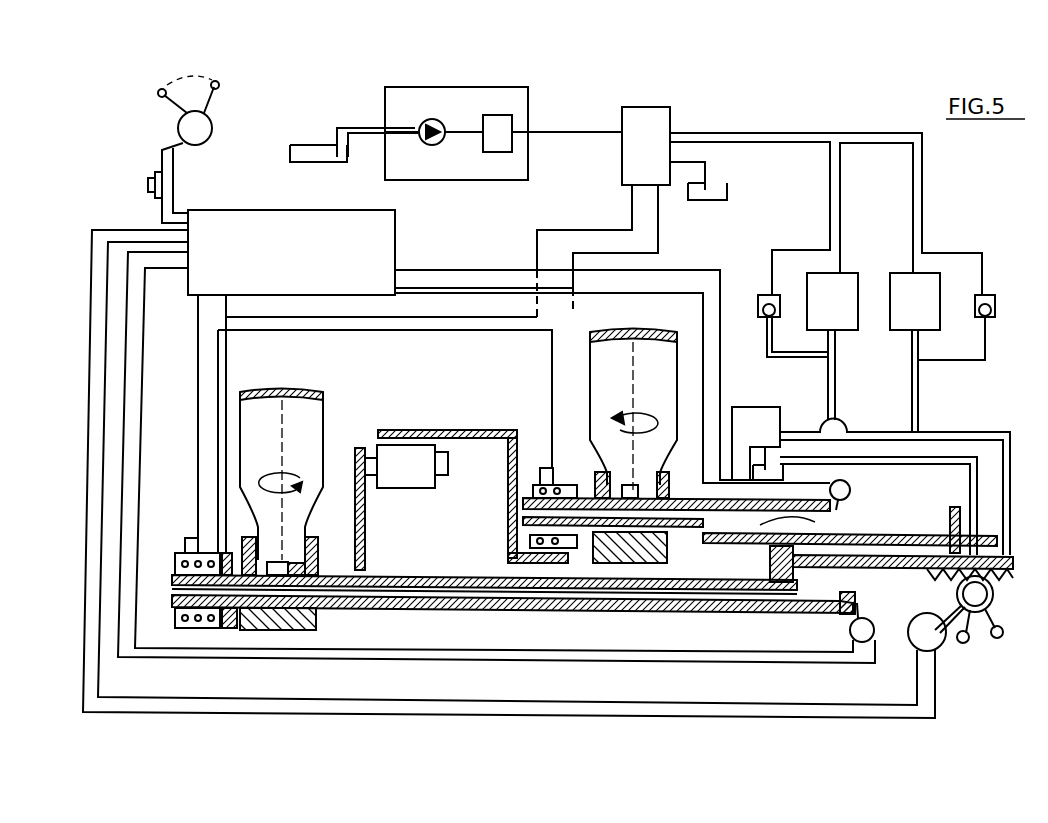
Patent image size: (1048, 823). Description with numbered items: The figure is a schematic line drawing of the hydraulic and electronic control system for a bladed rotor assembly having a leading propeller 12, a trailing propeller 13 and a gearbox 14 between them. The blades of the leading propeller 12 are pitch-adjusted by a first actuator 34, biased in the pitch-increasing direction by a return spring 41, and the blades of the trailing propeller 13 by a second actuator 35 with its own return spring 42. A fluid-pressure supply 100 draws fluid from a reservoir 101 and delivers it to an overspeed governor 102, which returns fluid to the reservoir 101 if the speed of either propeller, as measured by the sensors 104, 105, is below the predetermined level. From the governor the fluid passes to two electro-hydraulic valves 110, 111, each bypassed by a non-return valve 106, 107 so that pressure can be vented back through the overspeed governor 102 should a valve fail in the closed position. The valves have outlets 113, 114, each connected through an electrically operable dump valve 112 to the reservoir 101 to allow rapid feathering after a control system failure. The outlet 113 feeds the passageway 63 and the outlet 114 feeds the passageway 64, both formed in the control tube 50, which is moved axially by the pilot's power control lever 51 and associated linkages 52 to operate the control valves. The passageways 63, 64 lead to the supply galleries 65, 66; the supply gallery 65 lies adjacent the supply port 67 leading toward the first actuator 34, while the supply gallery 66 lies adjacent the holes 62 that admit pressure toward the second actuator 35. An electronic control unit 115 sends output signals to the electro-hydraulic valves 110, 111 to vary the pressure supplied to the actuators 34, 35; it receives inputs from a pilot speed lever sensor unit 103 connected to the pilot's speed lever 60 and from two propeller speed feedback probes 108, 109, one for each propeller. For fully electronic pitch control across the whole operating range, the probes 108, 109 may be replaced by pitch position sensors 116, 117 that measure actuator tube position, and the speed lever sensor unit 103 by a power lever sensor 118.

The leading propeller 12 is at (325, 415).
The trailing propeller 13 is at (632, 332).
The gearbox 14 is at (400, 490).
The first actuator 34 is at (185, 622).
The second actuator 35 is at (545, 549).
The return spring 41 is at (175, 566).
The return spring 42 is at (538, 517).
The control tube 50 is at (752, 552).
The power control lever 51 is at (968, 645).
The linkages 52 is at (1000, 610).
The pilot's speed lever 60 is at (158, 93).
The holes 62 is at (828, 532).
The passageway 63 is at (878, 570).
The passageway 64 is at (905, 556).
The supply gallery 65 is at (815, 598).
The supply gallery 66 is at (770, 562).
The supply port 67 is at (800, 610).
The fluid-pressure supply 100 is at (428, 181).
The reservoir 101 is at (330, 142).
The overspeed governor 102 is at (620, 183).
The pilot speed lever sensor unit 103 is at (148, 186).
The sensor 104 is at (185, 545).
The sensor 105 is at (533, 490).
The non-return valve 106 is at (990, 296).
The non-return valve 107 is at (760, 298).
The propeller speed feedback probe 108 is at (198, 505).
The propeller speed feedback probe 109 is at (547, 466).
The first electro-hydraulic valve 110 is at (935, 272).
The electro-hydraulic valve 111 is at (845, 270).
The dump valve 112 is at (790, 396).
The outlet 113 is at (918, 400).
The outlet 114 is at (835, 418).
The electronic control unit 115 is at (312, 210).
The pitch position sensor 116 is at (850, 484).
The pitch position sensor 117 is at (866, 642).
The power lever sensor 118 is at (912, 648).